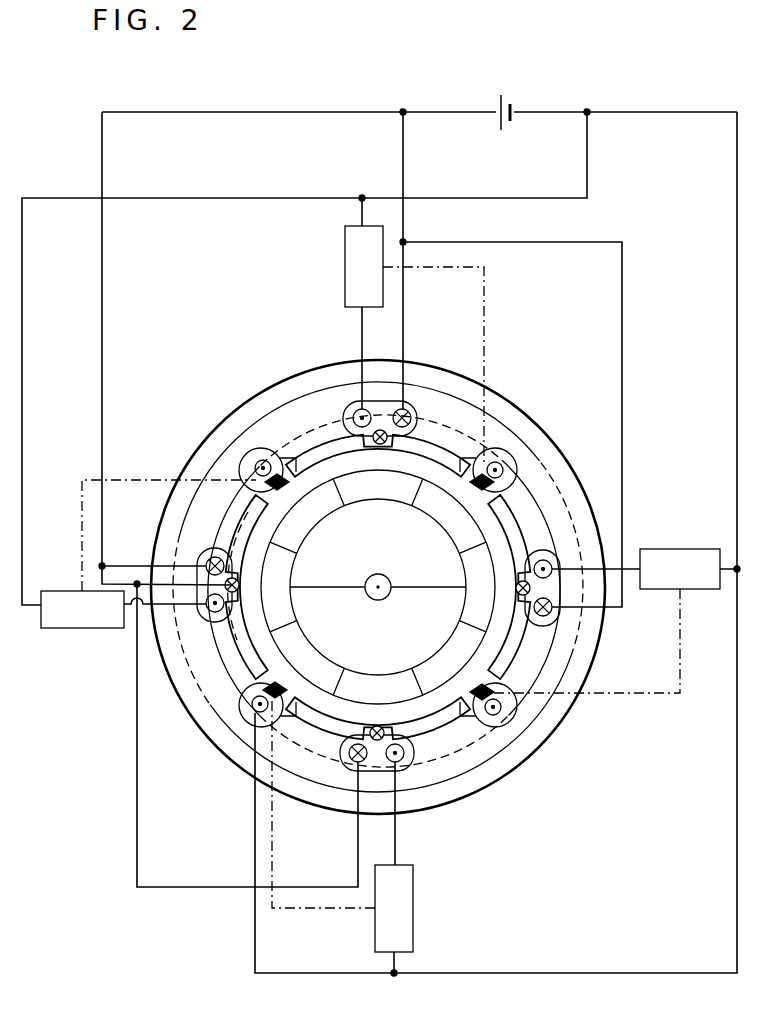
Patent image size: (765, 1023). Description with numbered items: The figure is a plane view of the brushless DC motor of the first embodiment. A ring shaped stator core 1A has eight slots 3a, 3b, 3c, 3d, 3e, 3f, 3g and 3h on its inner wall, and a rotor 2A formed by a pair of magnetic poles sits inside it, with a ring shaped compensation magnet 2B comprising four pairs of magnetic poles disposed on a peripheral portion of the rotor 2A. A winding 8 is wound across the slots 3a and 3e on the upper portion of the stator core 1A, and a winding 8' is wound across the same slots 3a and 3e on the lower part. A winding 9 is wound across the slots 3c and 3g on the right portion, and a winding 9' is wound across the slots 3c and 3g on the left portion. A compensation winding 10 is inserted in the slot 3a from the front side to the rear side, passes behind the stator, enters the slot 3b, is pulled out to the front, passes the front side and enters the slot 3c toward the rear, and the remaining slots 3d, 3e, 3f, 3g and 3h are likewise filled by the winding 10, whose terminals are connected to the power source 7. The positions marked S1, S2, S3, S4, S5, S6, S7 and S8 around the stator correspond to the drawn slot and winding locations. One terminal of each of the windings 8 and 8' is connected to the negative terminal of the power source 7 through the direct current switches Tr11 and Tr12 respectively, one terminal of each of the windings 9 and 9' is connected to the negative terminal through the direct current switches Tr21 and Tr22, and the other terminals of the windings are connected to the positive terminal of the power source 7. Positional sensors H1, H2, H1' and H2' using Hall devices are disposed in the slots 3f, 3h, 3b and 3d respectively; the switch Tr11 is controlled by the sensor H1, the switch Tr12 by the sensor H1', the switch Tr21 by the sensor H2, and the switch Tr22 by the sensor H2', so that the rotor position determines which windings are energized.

The stator core 1A is at (576, 704).
The rotor 2A is at (450, 565).
The compensation magnet 2B is at (463, 528).
The slot 3a is at (202, 611).
The slot 3b is at (262, 450).
The slot 3c is at (350, 401).
The slot 3d is at (500, 468).
The slot 3e is at (557, 575).
The slot 3f is at (512, 726).
The slot 3g is at (402, 774).
The slot 3h is at (262, 706).
The power source 7 is at (516, 108).
The winding 8 is at (360, 428).
The winding 8' is at (390, 753).
The winding 9 is at (561, 529).
The winding 9' is at (242, 689).
The compensation winding 10 is at (232, 516).
The positional sensor H1 is at (488, 769).
The positional sensor H1' is at (275, 408).
The positional sensor H2 is at (205, 696).
The positional sensor H2' is at (548, 456).
The stator coil S1 is at (205, 556).
The stator coil S2 is at (250, 456).
The stator coil S3 is at (380, 400).
The stator coil S4 is at (497, 448).
The stator coil S5 is at (546, 613).
The stator coil S6 is at (531, 735).
The stator coil S7 is at (380, 773).
The stator coil S8 is at (243, 714).
The direct current switch Tr11 is at (680, 569).
The direct current switch Tr12 is at (82, 609).
The direct current switch Tr21 is at (394, 908).
The direct current switch Tr22 is at (364, 266).